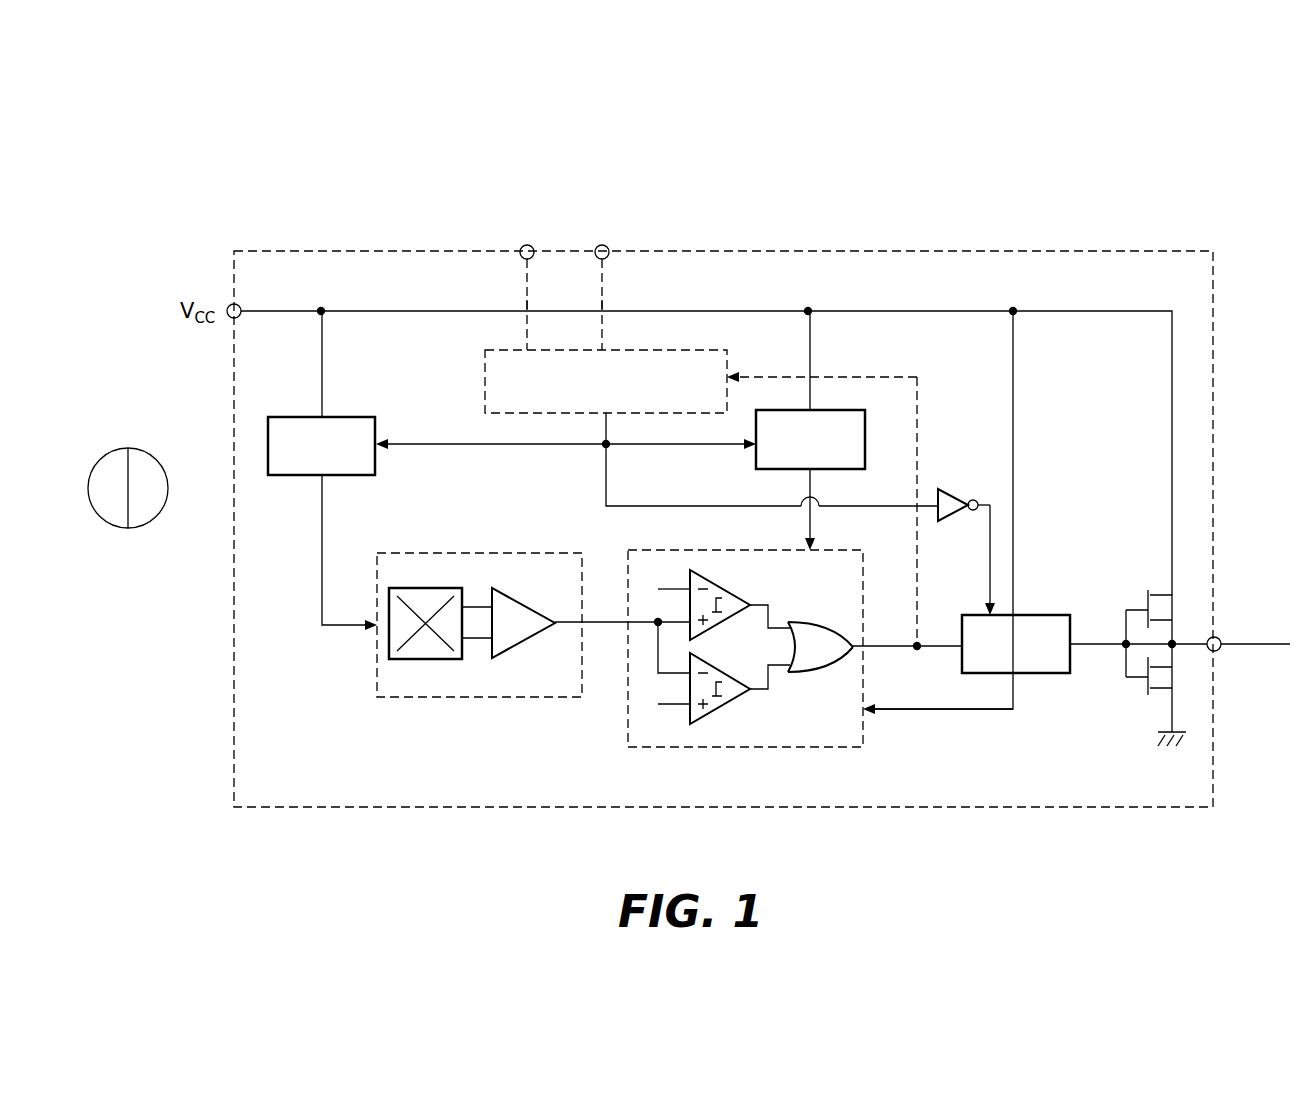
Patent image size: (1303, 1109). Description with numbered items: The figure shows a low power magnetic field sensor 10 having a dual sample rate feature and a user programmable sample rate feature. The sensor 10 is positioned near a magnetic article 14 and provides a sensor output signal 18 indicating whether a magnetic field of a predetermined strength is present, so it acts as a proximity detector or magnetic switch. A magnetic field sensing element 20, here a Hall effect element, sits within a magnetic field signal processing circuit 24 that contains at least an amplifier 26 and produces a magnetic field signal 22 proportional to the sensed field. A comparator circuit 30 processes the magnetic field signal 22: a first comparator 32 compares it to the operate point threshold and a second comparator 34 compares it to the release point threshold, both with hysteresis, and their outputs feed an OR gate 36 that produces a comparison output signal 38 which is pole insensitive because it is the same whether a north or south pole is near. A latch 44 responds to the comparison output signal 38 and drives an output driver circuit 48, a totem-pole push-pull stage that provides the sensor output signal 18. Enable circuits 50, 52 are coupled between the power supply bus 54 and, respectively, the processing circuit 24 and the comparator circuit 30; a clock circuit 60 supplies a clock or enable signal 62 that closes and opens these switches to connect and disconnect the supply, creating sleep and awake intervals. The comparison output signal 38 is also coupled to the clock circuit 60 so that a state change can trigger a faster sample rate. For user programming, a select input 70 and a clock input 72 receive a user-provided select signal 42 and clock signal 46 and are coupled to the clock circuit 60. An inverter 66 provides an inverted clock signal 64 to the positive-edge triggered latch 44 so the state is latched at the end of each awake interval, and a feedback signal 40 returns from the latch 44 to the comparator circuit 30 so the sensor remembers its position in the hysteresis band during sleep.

The magnetic field sensor 10 is at (838, 251).
The magnetic article 14 is at (83, 447).
The sensor output signal 18 is at (1240, 647).
The magnetic field sensing element 20 is at (417, 588).
The magnetic field signal 22 is at (594, 612).
The magnetic field signal processing circuit 24 is at (479, 613).
The amplifier 26 is at (518, 602).
The comparator circuit 30 is at (745, 638).
The first comparator 32 is at (718, 588).
The second comparator 34 is at (718, 671).
The OR gate 36 is at (808, 627).
The comparison output signal 38 is at (884, 641).
The feedback signal 40 is at (920, 713).
The select signal 42 is at (525, 305).
The latch 44 is at (1053, 615).
The clock signal 46 is at (604, 305).
The output driver circuit 48 is at (1130, 603).
The enable circuit 50 is at (355, 417).
The enable circuit 52 is at (849, 410).
The Vcc bus 54 is at (847, 311).
The clock circuit 60 is at (663, 350).
The clock signal 62 is at (463, 447).
The inverted clock signal 64 is at (990, 565).
The inverter 66 is at (950, 489).
The select input 70 is at (526, 266).
The clock input 72 is at (603, 266).